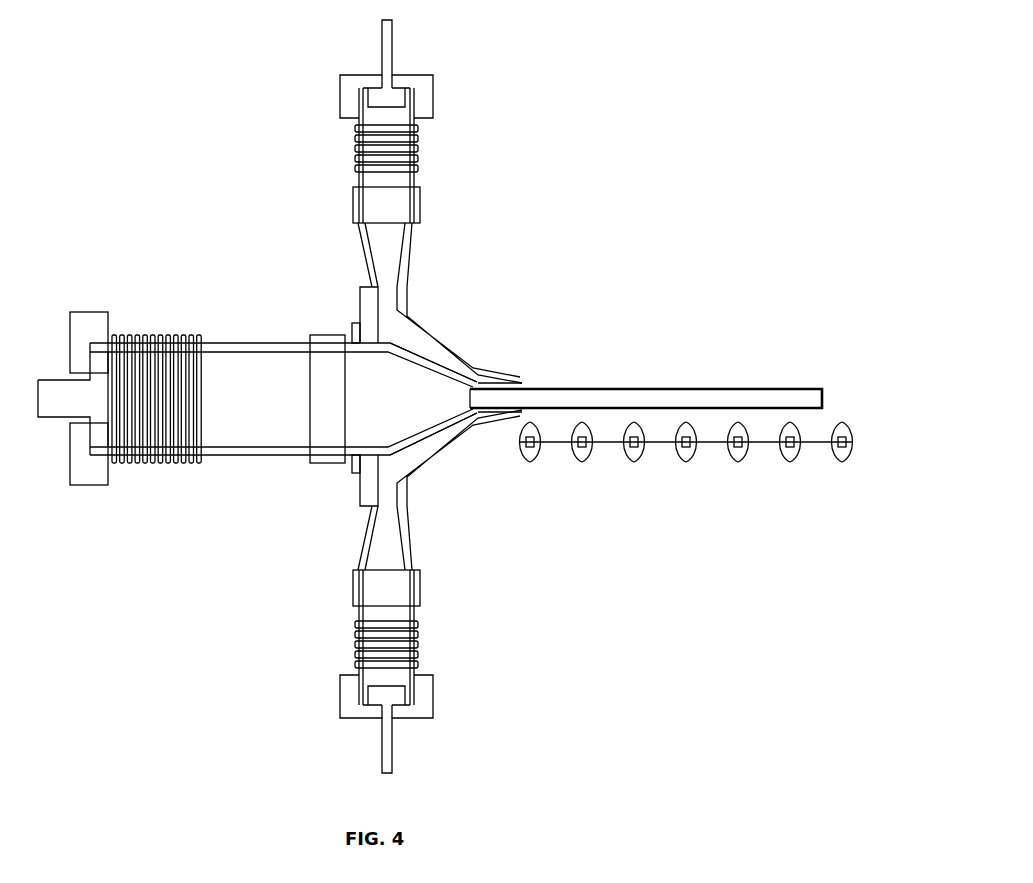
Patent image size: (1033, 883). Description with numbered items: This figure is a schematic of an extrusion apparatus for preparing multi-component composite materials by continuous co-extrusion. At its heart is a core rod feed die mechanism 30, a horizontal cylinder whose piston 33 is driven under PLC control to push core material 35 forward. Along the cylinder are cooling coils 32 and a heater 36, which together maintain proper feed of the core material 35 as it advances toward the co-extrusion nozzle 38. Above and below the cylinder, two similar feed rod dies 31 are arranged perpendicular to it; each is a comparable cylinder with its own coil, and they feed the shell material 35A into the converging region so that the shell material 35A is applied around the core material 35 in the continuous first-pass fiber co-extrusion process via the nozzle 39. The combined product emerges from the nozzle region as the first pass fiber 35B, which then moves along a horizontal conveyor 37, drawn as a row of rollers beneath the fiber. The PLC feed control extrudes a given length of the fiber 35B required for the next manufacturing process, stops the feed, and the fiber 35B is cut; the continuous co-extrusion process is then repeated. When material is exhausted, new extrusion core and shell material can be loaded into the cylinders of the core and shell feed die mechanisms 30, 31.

The core rod feed die mechanism 30 is at (246, 341).
The feed rod dies 31 is at (415, 122).
The cooling coils 32 is at (134, 473).
The piston 33 is at (53, 417).
The core material 35 is at (427, 381).
The shell material 35A is at (407, 335).
The first pass fiber 35B is at (688, 387).
The heater 36 is at (318, 333).
The horizontal conveyor 37 is at (585, 445).
The co-extrusion nozzle 38 is at (447, 435).
The nozzle 39 is at (497, 376).